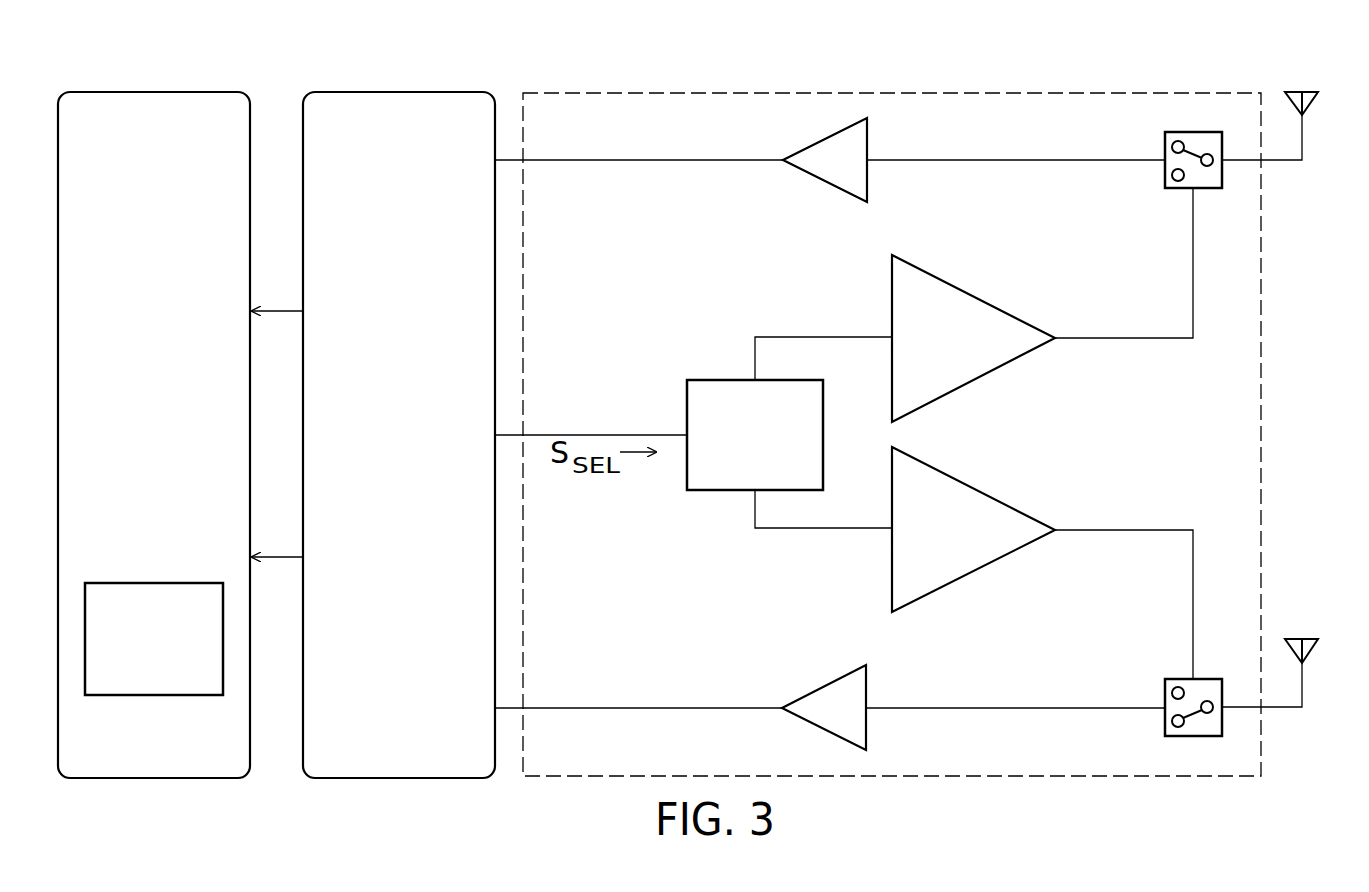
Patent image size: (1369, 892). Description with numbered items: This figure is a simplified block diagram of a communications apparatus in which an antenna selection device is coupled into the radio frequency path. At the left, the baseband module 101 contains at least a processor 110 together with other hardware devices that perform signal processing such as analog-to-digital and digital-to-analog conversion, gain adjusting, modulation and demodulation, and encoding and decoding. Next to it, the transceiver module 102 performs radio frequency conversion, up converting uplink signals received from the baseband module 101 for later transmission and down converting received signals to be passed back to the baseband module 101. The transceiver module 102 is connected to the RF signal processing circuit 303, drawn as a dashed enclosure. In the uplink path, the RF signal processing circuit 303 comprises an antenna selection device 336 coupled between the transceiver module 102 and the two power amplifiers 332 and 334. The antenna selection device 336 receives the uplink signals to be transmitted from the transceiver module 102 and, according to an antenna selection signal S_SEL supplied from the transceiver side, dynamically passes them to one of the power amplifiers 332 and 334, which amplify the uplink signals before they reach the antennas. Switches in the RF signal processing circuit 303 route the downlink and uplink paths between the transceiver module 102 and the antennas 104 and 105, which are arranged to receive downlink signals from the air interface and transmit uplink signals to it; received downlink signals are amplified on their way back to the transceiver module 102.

The baseband module 101 is at (195, 92).
The transceiver module 102 is at (440, 92).
The processor 110 is at (155, 583).
The radio frequency signal processing circuit 303 is at (1126, 91).
The power amplifier 332 is at (970, 297).
The power amplifier 334 is at (970, 489).
The antenna selection device 336 is at (795, 378).
The antenna 104 is at (1297, 92).
The antenna 105 is at (1297, 639).